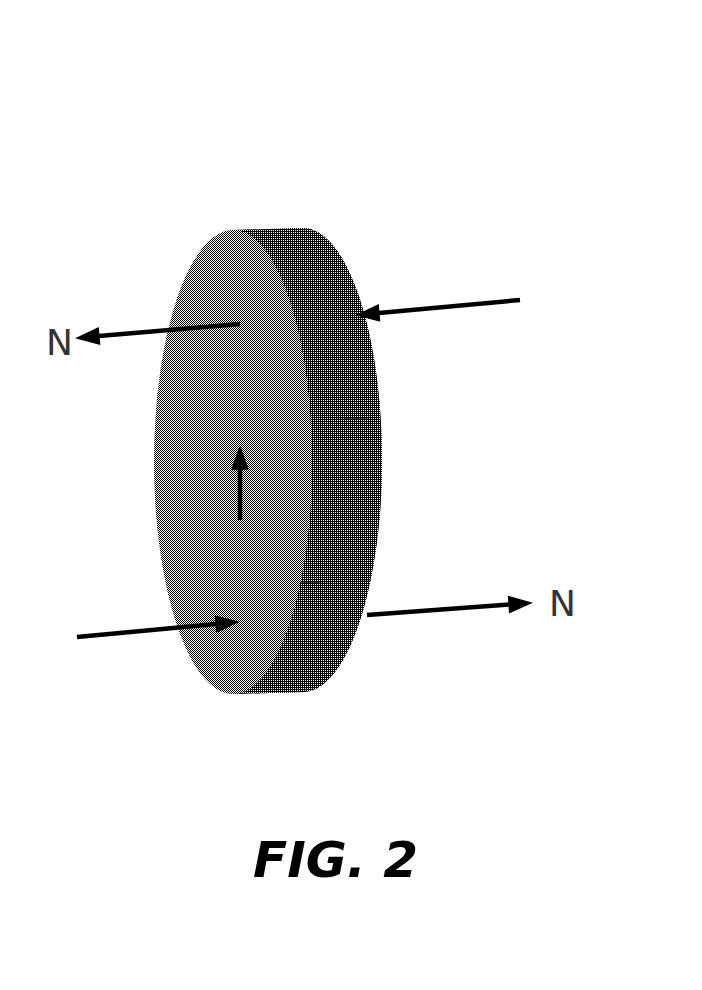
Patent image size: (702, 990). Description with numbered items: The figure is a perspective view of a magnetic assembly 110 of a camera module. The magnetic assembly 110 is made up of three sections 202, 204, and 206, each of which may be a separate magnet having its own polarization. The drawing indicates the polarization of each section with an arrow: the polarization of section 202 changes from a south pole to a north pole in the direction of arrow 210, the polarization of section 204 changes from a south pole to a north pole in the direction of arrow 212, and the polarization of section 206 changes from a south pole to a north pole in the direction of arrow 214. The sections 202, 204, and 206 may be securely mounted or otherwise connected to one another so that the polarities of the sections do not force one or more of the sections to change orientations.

The magnetic assembly 110 is at (382, 374).
The section 202 is at (358, 365).
The section 204 is at (358, 485).
The section 206 is at (320, 655).
The arrow 210 is at (93, 331).
The arrow 212 is at (237, 490).
The arrow 214 is at (125, 635).